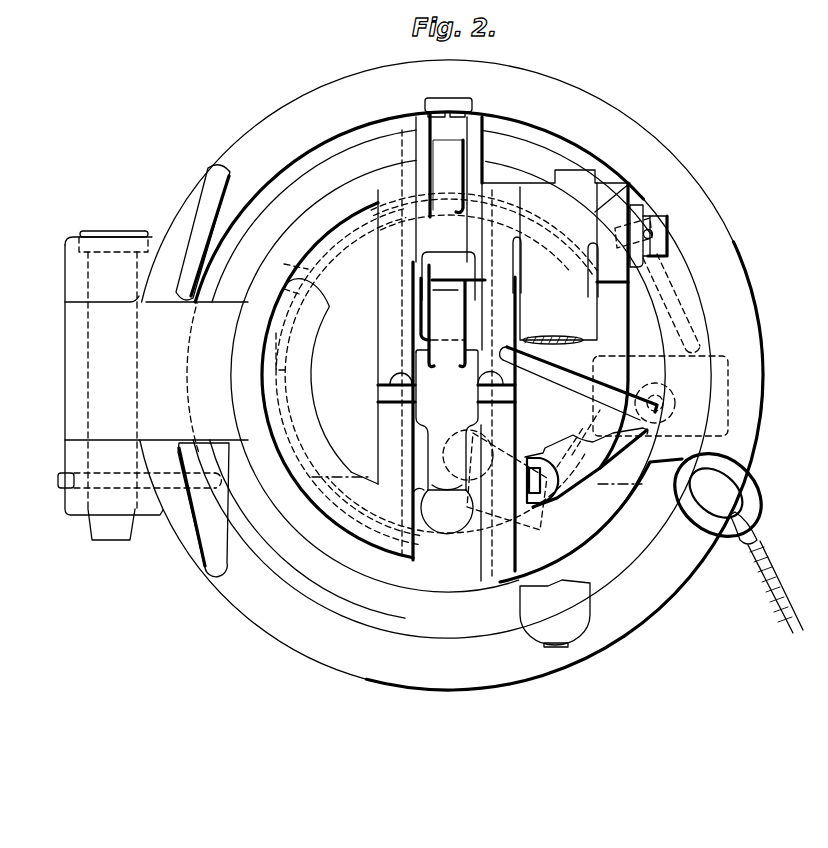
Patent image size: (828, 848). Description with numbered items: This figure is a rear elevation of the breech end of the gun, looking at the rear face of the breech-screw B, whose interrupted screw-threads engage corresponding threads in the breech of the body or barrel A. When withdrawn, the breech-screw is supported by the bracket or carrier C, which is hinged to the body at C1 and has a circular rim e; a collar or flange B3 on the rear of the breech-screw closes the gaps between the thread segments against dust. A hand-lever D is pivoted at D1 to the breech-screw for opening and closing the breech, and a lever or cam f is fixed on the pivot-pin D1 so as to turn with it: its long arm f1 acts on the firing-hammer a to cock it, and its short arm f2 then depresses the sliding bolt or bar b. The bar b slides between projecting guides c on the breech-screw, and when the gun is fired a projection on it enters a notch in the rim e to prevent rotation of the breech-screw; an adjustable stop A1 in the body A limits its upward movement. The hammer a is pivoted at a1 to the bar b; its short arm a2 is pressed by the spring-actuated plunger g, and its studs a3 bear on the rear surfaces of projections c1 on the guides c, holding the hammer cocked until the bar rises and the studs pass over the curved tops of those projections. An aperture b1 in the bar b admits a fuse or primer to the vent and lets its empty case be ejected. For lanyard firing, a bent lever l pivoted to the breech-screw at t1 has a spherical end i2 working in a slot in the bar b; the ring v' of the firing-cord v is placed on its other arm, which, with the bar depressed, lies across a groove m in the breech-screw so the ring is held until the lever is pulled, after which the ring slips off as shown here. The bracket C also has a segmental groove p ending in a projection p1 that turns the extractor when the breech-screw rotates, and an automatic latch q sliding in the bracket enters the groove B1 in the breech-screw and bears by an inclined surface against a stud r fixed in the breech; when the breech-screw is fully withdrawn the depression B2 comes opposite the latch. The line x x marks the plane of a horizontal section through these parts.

The body or barrel of the gun A is at (451, 375).
The adjustable stop A1 is at (430, 101).
The breech-screw B is at (327, 374).
The groove in the breech-screw B1 is at (598, 413).
The depression or cavity in the breech-screw B2 is at (507, 481).
The collar or flange on the breech-screw B3 is at (310, 224).
The bracket or carrier C is at (437, 374).
The hinge or pivot of the bracket C1 is at (132, 237).
The hand-lever D is at (570, 415).
The pivot-pin of the hand-lever D1 is at (668, 230).
The firing-hammer a is at (447, 420).
The pivot of the hammer a1 is at (447, 472).
The short arm of the hammer a2 is at (447, 509).
The studs or projections on the hammer a3 is at (446, 376).
The sliding bolt or bar b is at (396, 446).
The aperture in the sliding bolt b1 is at (428, 300).
The projecting guides c is at (530, 356).
The projections on the guides c1 is at (446, 403).
The circular rim of the bracket e is at (506, 189).
The lever or cam f is at (448, 286).
The long arm of the lever f1 is at (466, 292).
The short arm of the lever f2 is at (448, 176).
The rod or plunger g is at (418, 492).
The circular or spherical end of the bent lever i2 is at (468, 454).
The bent lever l is at (590, 394).
The groove in the rear end of the breech-screw m is at (578, 383).
The segmental groove or recess in the bracket p is at (384, 206).
The projection at the end of the groove p1 is at (322, 258).
The automatic latch q is at (660, 396).
The stud r is at (655, 403).
The pivot of the bent lever t1 is at (543, 480).
The firing-cord or lanyard v is at (775, 587).
The hook or ring on the lanyard v' is at (718, 494).
The section line x x is at (475, 478).